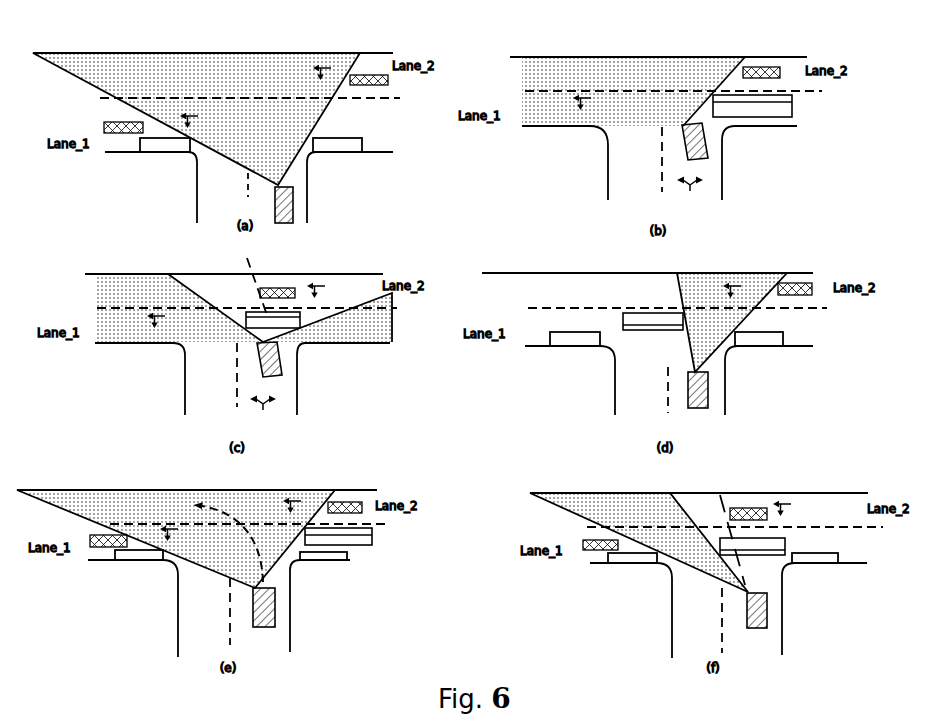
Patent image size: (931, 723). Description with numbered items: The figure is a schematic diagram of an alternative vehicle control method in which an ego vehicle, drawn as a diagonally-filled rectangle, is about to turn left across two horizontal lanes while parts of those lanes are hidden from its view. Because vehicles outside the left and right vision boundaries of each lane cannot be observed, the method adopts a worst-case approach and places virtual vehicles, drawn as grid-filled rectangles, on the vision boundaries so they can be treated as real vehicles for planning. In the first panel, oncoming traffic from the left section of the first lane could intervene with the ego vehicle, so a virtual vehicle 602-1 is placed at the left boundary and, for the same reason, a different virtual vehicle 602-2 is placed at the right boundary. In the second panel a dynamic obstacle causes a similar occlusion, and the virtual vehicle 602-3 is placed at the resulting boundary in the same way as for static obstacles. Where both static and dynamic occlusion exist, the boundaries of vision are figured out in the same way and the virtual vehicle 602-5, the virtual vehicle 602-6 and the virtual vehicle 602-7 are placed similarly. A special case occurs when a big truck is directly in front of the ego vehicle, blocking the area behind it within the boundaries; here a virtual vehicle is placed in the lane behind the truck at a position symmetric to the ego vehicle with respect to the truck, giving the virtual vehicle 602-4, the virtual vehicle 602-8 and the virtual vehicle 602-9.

The virtual vehicle 602-1 is at (120, 133).
The virtual vehicle 602-2 is at (363, 75).
The virtual vehicle 602-3 is at (752, 67).
The virtual vehicle 602-4 is at (272, 288).
The virtual vehicle 602-5 is at (797, 283).
The virtual vehicle 602-6 is at (100, 547).
The virtual vehicle 602-7 is at (347, 502).
The virtual vehicle 602-8 is at (593, 550).
The virtual vehicle 602-9 is at (743, 508).